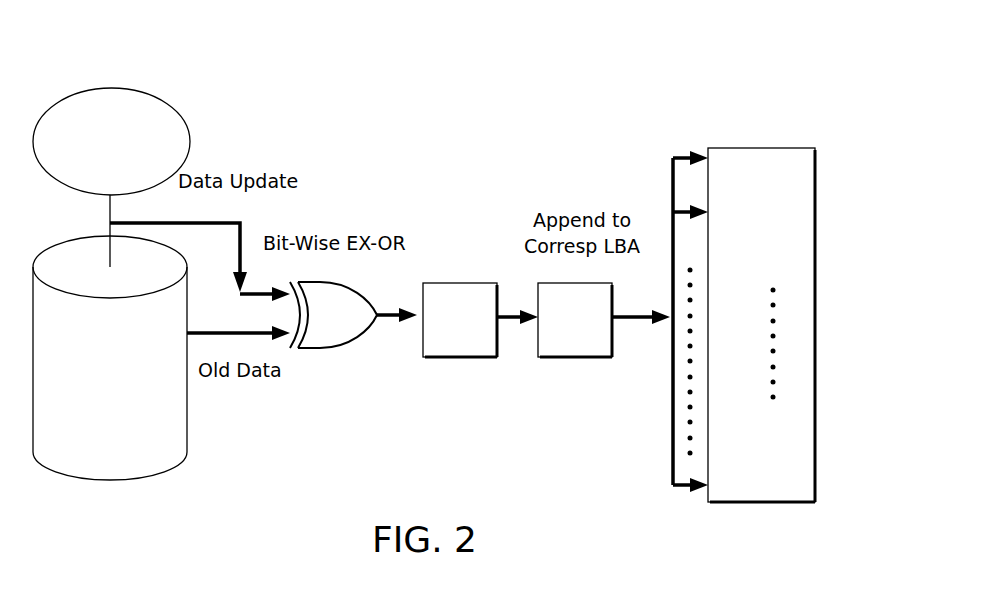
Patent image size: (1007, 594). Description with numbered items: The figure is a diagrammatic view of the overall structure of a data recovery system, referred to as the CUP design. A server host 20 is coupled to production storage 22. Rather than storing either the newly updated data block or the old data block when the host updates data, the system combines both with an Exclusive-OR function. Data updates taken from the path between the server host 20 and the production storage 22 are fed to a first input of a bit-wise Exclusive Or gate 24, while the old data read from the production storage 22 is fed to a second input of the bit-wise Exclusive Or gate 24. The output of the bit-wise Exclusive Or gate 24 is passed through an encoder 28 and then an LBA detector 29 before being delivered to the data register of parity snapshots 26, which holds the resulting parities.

The server host 20 is at (110, 88).
The production storage 22 is at (108, 480).
The bit-wise Exclusive Or gate 24 is at (342, 349).
The data register of parity snapshots 26 is at (762, 503).
The encoder 28 is at (460, 358).
The LBA detector 29 is at (575, 358).